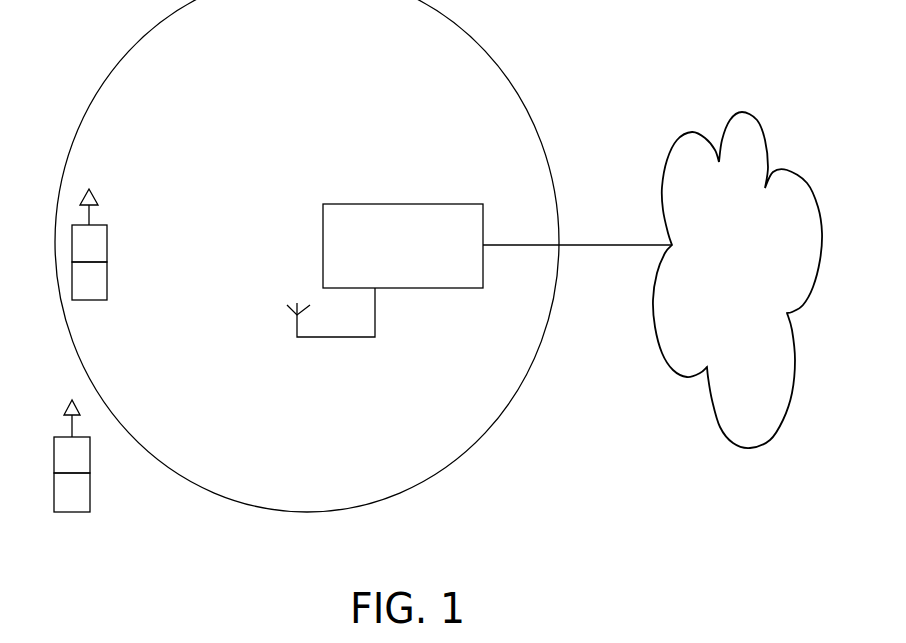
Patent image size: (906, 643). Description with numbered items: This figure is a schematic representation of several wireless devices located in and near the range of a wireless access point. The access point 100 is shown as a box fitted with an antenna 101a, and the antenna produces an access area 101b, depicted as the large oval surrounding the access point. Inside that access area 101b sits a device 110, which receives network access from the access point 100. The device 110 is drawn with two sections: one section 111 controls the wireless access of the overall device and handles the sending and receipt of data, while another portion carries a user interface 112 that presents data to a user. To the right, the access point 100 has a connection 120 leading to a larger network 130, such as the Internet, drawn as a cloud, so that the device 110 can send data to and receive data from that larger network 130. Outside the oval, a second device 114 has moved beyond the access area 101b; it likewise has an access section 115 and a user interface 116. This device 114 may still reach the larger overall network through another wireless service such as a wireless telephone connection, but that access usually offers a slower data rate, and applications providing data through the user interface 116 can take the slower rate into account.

The access point 100 is at (463, 274).
The antenna 101a is at (375, 322).
The access area 101b is at (332, 24).
The device 110 is at (157, 268).
The access section 111 is at (107, 247).
The user interface 112 is at (125, 296).
The device 114 is at (146, 505).
The access section 115 is at (90, 457).
The user interface 116 is at (168, 490).
The connection 120 is at (640, 242).
The larger network 130 is at (750, 340).